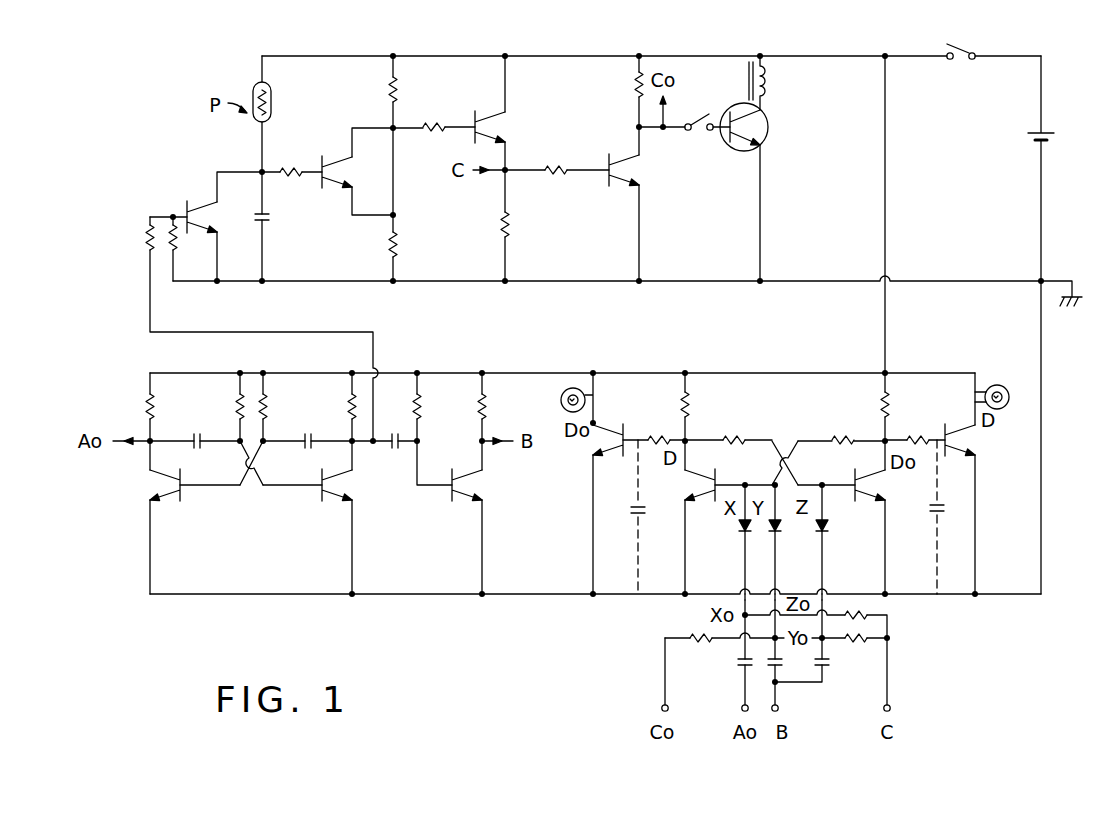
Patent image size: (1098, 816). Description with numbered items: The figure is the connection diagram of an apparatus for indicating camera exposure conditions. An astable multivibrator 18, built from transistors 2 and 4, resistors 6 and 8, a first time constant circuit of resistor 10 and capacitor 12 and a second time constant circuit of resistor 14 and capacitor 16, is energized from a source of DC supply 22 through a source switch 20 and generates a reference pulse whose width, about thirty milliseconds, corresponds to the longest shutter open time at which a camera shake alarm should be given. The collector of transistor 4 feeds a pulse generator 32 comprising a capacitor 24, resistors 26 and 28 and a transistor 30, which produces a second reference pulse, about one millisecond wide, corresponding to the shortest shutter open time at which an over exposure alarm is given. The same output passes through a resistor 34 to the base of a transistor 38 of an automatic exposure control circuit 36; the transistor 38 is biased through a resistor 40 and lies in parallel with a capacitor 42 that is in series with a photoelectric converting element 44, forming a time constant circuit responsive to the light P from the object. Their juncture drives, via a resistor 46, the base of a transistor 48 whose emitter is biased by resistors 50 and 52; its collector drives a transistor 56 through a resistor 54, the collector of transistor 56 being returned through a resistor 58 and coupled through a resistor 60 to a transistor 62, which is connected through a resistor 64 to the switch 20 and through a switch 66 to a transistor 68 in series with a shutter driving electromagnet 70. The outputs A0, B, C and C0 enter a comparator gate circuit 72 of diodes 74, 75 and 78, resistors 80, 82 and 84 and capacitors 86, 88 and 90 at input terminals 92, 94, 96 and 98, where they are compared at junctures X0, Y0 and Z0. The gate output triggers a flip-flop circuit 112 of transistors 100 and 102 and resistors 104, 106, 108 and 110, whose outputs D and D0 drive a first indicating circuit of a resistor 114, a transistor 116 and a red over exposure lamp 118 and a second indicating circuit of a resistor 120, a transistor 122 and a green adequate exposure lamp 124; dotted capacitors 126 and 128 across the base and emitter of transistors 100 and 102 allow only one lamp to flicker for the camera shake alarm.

The transistor 2 is at (195, 517).
The transistor 4 is at (309, 519).
The resistor 6 is at (140, 407).
The resistor 8 is at (341, 407).
The resistor 10 is at (225, 407).
The capacitor 12 is at (193, 427).
The resistor 14 is at (277, 407).
The capacitor 16 is at (307, 427).
The astable multivibrator 18 is at (243, 529).
The source switch 20 is at (965, 39).
The source of DC supply 22 is at (1032, 170).
The capacitor 24 is at (386, 427).
The resistor 26 is at (433, 405).
The resistor 28 is at (498, 407).
The transistor 30 is at (463, 519).
The pulse generator 32 is at (441, 451).
The resistor 34 is at (133, 239).
The automatic exposure control circuit 36 is at (437, 223).
The transistor 38 is at (206, 204).
The resistor 40 is at (188, 247).
The capacitor 42 is at (277, 228).
The photoelectric converting element 44 is at (276, 114).
The resistor 46 is at (290, 157).
The transistor 48 is at (338, 157).
The resistor 50 is at (377, 90).
The resistor 52 is at (377, 206).
The resistor 54 is at (449, 115).
The transistor 56 is at (504, 113).
The resistor 58 is at (521, 227).
The resistor 60 is at (557, 183).
The transistor 62 is at (637, 204).
The resistor 64 is at (623, 90).
The switch 66 is at (707, 135).
The transistor 68 is at (759, 193).
The shutter driving electromagnet 70 is at (741, 81).
The comparator gate circuit 72 is at (786, 586).
The diode 74 is at (733, 530).
The diode 75 is at (776, 532).
The diode 78 is at (827, 528).
The resistor 80 is at (720, 651).
The resistor 82 is at (870, 615).
The resistor 84 is at (856, 651).
The capacitor 86 is at (742, 664).
The capacitor 88 is at (782, 663).
The capacitor 90 is at (826, 666).
The input terminal 92 is at (730, 708).
The input terminal 94 is at (790, 708).
The input terminal 96 is at (902, 678).
The input terminal 98 is at (681, 678).
The transistor 100 is at (713, 519).
The transistor 102 is at (860, 517).
The resistor 104 is at (700, 407).
The resistor 106 is at (728, 425).
The resistor 108 is at (841, 425).
The resistor 110 is at (905, 407).
The flip-flop circuit 112 is at (775, 423).
The resistor 114 is at (654, 425).
The transistor 116 is at (609, 510).
The over exposure condition alarm indicating lamp 118 is at (560, 398).
The resistor 120 is at (915, 425).
The transistor 122 is at (980, 485).
The adequate exposure condition indicating lamp 124 is at (998, 384).
The capacitor 126 is at (620, 517).
The capacitor 128 is at (950, 517).